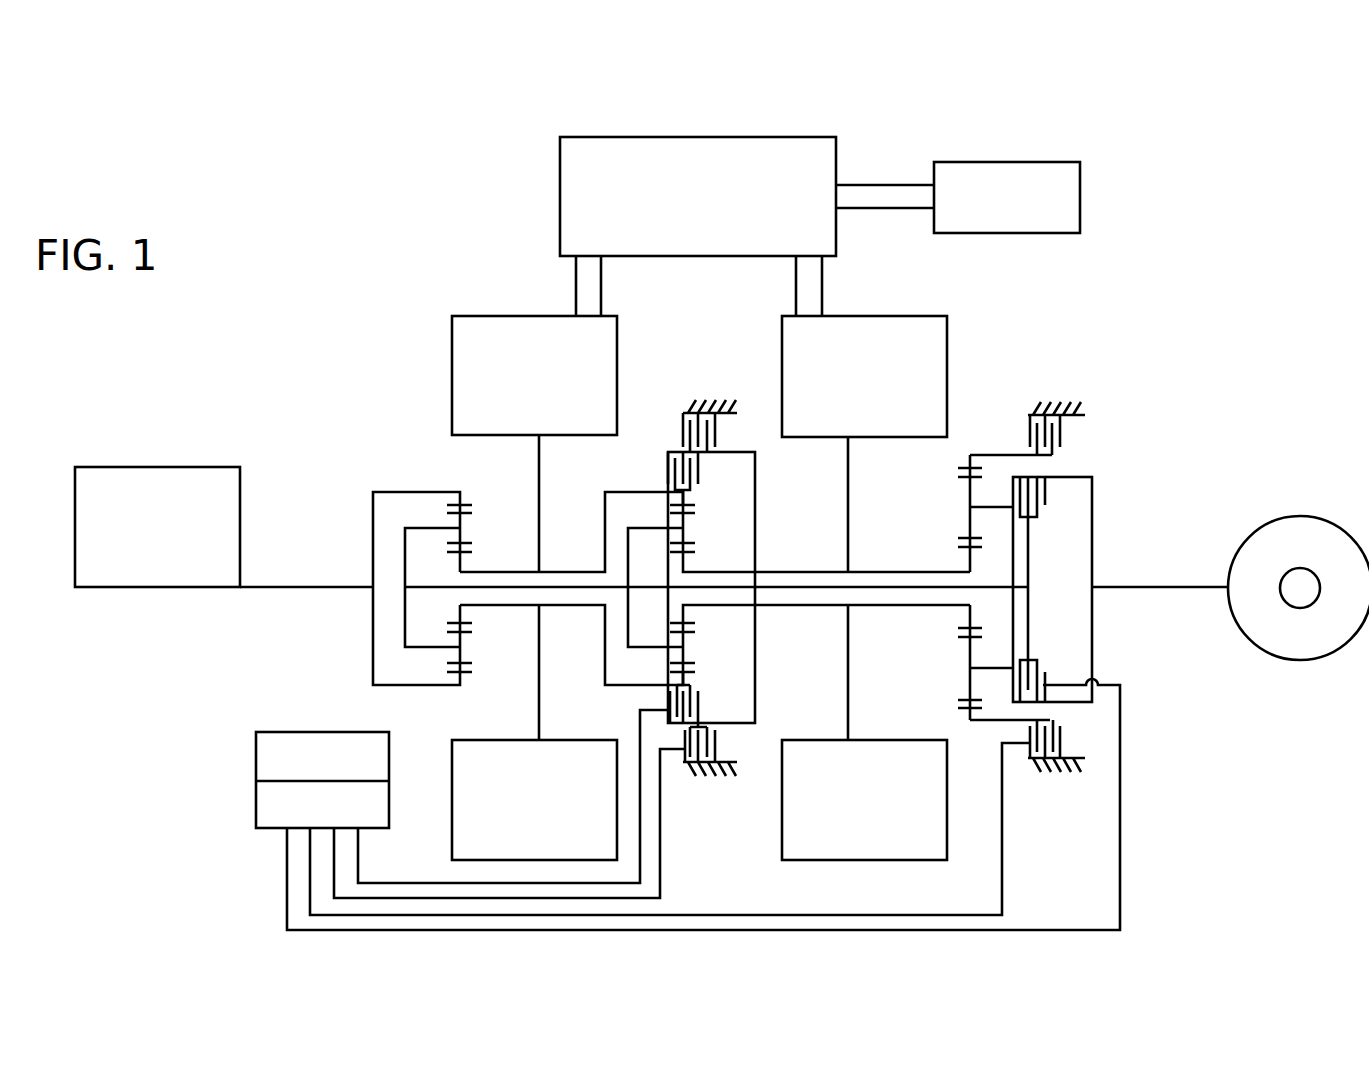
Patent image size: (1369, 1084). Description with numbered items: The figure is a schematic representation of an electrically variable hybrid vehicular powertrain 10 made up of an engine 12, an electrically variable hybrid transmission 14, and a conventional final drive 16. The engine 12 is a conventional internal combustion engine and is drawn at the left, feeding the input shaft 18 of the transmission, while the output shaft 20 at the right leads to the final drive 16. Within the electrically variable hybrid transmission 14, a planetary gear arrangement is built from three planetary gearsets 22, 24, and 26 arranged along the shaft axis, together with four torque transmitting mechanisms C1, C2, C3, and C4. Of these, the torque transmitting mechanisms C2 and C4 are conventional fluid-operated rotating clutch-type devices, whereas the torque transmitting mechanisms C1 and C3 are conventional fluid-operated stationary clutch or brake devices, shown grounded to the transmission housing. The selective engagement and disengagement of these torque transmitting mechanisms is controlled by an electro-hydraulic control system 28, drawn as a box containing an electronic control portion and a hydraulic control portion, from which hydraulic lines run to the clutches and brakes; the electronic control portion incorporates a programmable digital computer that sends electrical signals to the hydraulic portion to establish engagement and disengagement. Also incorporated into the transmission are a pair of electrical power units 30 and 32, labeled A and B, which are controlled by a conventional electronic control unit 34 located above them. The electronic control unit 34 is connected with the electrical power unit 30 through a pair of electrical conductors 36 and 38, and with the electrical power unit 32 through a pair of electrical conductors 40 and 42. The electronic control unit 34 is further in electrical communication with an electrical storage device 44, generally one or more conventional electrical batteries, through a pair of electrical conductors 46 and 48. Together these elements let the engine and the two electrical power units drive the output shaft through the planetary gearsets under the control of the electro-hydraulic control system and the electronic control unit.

The powertrain 10 is at (460, 140).
The engine 12 is at (162, 467).
The electrically variable hybrid transmission 14 is at (346, 220).
The final drive 16 is at (1300, 517).
The input shaft 18 is at (343, 588).
The output shaft 20 is at (1137, 590).
The planetary gearset 22 is at (412, 702).
The planetary gearset 24 is at (632, 700).
The planetary gearset 26 is at (962, 713).
The electro-hydraulic control system 28 is at (230, 745).
The electrical power unit 30 is at (452, 350).
The electrical power unit 32 is at (947, 374).
The electronic control unit 34 is at (668, 137).
The electrical conductor 36 is at (576, 283).
The electrical conductor 38 is at (601, 280).
The electrical conductor 40 is at (796, 283).
The electrical conductor 42 is at (822, 282).
The electrical storage device 44 is at (1080, 200).
The electrical conductor 46 is at (880, 185).
The electrical conductor 48 is at (922, 208).
The torque transmitting mechanism C1 is at (1063, 428).
The torque transmitting mechanism C2 is at (1052, 624).
The torque transmitting mechanism C3 is at (719, 426).
The torque transmitting mechanism C4 is at (711, 614).